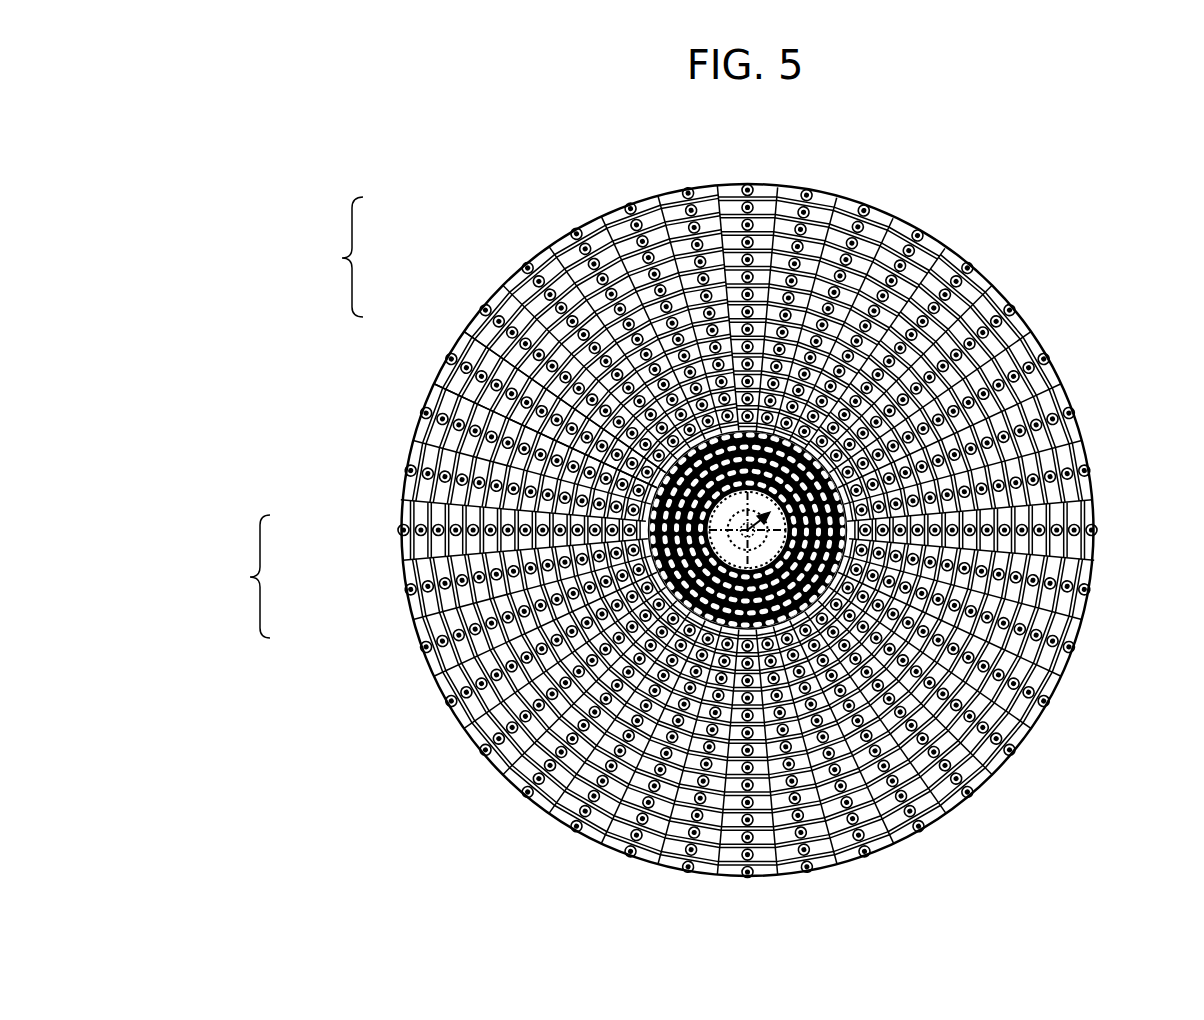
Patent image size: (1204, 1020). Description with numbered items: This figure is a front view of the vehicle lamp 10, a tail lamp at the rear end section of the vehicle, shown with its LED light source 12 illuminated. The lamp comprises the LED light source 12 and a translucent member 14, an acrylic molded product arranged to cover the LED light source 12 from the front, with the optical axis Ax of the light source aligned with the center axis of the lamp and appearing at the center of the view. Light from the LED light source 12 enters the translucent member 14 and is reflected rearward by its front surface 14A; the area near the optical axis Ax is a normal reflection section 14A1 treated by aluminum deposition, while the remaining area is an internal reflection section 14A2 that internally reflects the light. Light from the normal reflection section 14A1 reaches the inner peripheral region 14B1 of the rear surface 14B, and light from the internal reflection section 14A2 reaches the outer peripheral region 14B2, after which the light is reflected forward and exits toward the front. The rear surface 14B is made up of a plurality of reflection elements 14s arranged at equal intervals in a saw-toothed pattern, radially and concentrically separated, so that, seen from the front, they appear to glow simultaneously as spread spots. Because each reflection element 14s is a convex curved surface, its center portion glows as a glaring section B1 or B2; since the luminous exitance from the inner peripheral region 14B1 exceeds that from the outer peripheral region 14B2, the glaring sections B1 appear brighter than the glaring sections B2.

The vehicle lamp 10 is at (1158, 236).
The LED light source 12 is at (770, 552).
The translucent member 14 is at (685, 530).
The reflection elements 14s is at (1022, 745).
The front surface 14A is at (327, 257).
The normal reflection section 14A1 is at (623, 262).
The internal reflection section 14A2 is at (570, 338).
The rear surface 14B is at (234, 576).
The inner peripheral region 14B1 is at (652, 524).
The outer peripheral region 14B2 is at (423, 627).
The glaring sections B1 is at (797, 466).
The glaring sections B2 is at (443, 390).
The optical axis Ax is at (718, 552).